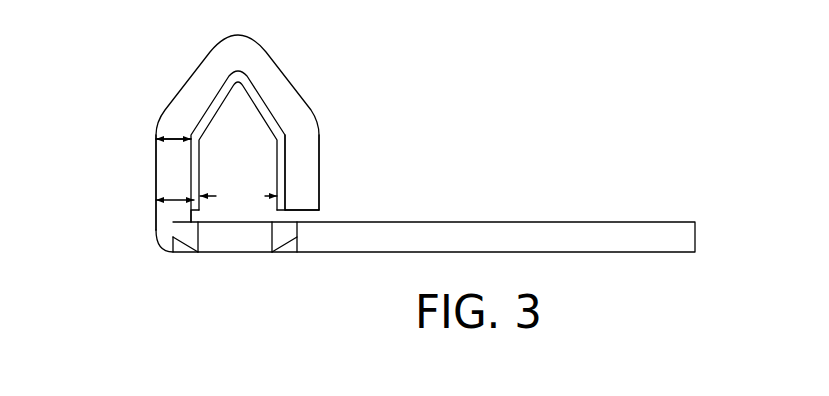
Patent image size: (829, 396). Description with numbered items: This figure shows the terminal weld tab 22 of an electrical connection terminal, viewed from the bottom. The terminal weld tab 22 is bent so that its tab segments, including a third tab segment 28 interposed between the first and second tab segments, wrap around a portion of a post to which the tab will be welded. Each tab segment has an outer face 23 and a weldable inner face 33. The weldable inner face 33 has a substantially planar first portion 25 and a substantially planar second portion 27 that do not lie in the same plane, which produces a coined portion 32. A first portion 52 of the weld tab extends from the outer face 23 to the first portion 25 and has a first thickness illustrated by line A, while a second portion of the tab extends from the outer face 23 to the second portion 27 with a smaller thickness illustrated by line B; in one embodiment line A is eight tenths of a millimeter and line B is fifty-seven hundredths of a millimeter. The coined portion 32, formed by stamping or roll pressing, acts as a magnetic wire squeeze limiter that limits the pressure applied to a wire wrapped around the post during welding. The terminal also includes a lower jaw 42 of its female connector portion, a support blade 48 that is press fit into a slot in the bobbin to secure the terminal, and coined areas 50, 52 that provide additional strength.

The terminal weld tab 22 is at (301, 77).
The outer face 23 is at (153, 190).
The substantially planar first portion 25 is at (285, 173).
The substantially planar second portion 27 is at (283, 135).
The third tab segment 28 is at (285, 192).
The coined portion 32 is at (190, 172).
The weldable inner face 33 is at (238, 198).
The lower jaw 42 is at (465, 240).
The support blade 48 is at (199, 256).
The coined area 50 is at (293, 252).
The first portion 52 is at (173, 252).
The line A is at (170, 198).
The line B is at (177, 134).